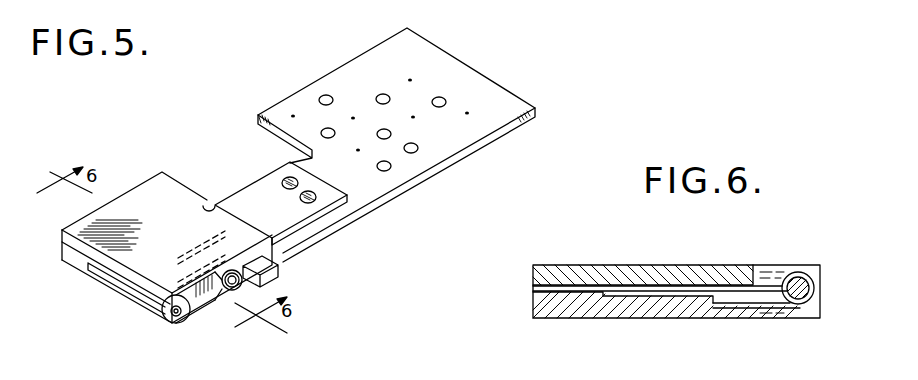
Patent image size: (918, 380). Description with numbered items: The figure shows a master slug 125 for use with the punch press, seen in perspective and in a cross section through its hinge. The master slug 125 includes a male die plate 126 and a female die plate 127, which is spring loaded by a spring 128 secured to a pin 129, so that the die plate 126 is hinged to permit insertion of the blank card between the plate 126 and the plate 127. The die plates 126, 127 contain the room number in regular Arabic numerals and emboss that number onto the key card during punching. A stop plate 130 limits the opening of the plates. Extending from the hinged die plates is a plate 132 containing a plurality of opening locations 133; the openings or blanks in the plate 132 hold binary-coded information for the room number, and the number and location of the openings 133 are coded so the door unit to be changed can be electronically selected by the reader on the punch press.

In FIG. 5, the master slug 125 is at (232, 148).
In FIG. 5, the male die plate 126 is at (173, 217).
In FIG. 6, the male die plate 126 is at (558, 273).
In FIG. 5, the female die plate 127 is at (92, 265).
In FIG. 6, the female die plate 127 is at (577, 308).
In FIG. 5, the spring 128 is at (238, 282).
In FIG. 6, the spring 128 is at (787, 309).
In FIG. 5, the pin 129 is at (172, 318).
In FIG. 6, the pin 129 is at (800, 278).
In FIG. 5, the stop plate 130 is at (278, 218).
In FIG. 5, the plate 132 is at (477, 93).
In FIG. 5, the openings 133 is at (382, 63).